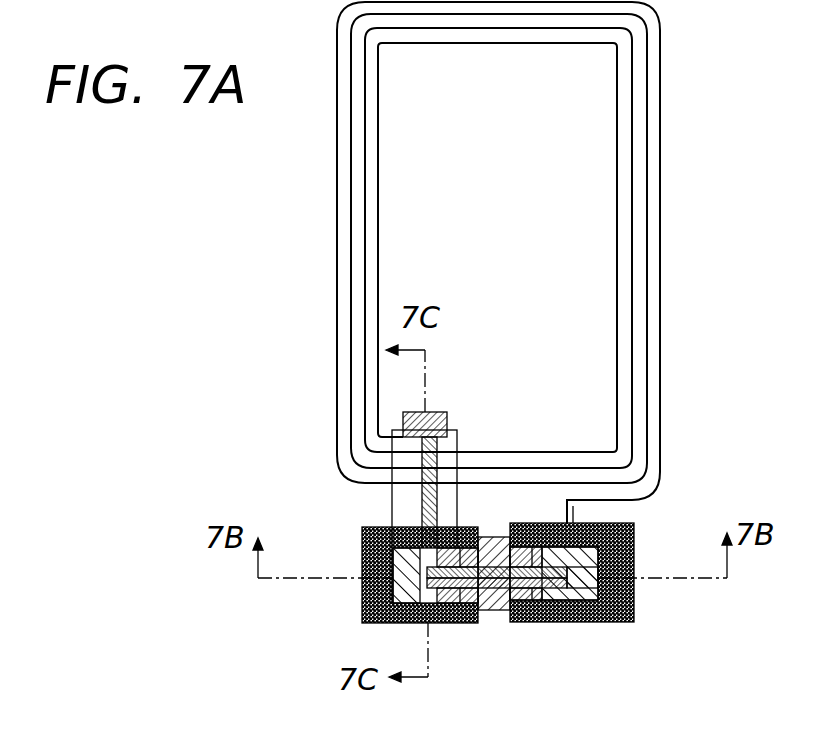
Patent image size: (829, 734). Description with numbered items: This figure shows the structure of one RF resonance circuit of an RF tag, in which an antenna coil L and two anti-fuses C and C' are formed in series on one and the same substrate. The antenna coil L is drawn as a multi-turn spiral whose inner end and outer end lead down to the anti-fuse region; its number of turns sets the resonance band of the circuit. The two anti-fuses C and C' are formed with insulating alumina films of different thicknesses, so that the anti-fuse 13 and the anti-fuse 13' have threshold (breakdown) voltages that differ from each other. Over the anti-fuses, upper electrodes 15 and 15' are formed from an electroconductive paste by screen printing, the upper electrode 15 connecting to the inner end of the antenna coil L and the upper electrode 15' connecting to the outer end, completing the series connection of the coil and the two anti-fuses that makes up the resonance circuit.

The antenna coil L is at (330, 239).
The upper electrode 15 is at (360, 473).
The upper electrode 15' is at (578, 450).
The anti-fuse 13 is at (376, 584).
The anti-fuse 13' is at (572, 611).
The anti-fuse C is at (406, 530).
The anti-fuse C' is at (634, 510).